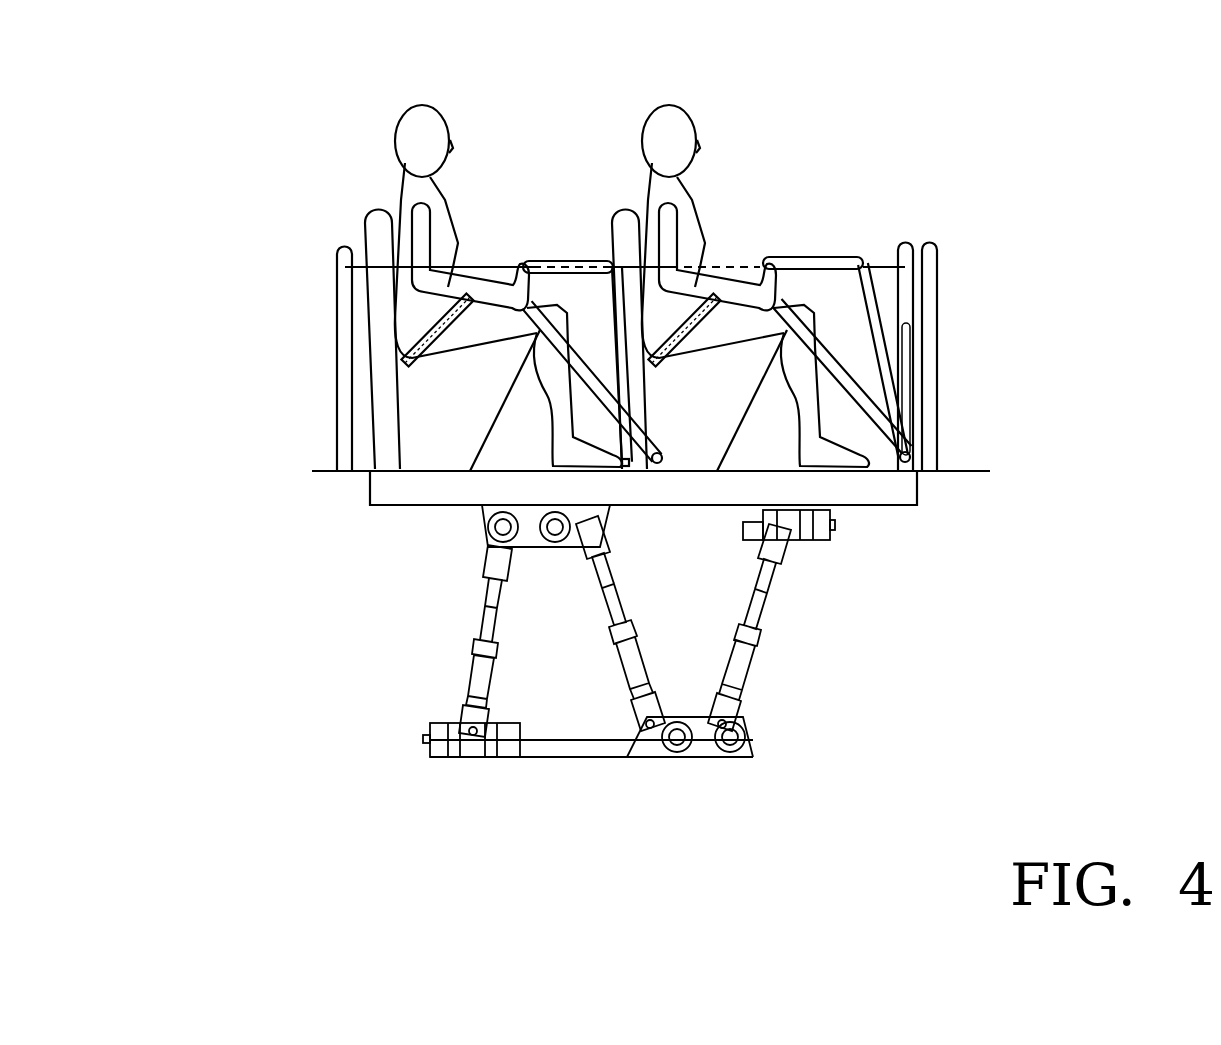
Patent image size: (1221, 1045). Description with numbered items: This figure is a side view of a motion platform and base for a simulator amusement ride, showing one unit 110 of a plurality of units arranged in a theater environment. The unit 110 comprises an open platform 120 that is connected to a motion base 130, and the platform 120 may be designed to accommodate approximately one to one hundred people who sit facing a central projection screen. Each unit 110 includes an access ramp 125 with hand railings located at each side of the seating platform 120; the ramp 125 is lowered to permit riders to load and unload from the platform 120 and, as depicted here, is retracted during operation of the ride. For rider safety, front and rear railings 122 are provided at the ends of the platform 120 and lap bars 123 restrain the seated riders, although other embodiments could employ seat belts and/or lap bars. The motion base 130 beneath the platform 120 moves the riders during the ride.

The unit 110 is at (328, 255).
The open platform 120 is at (923, 490).
The front and rear railings 122 is at (913, 243).
The lap bars 123 is at (803, 253).
The access ramp 125 is at (890, 267).
The motion base 130 is at (787, 652).